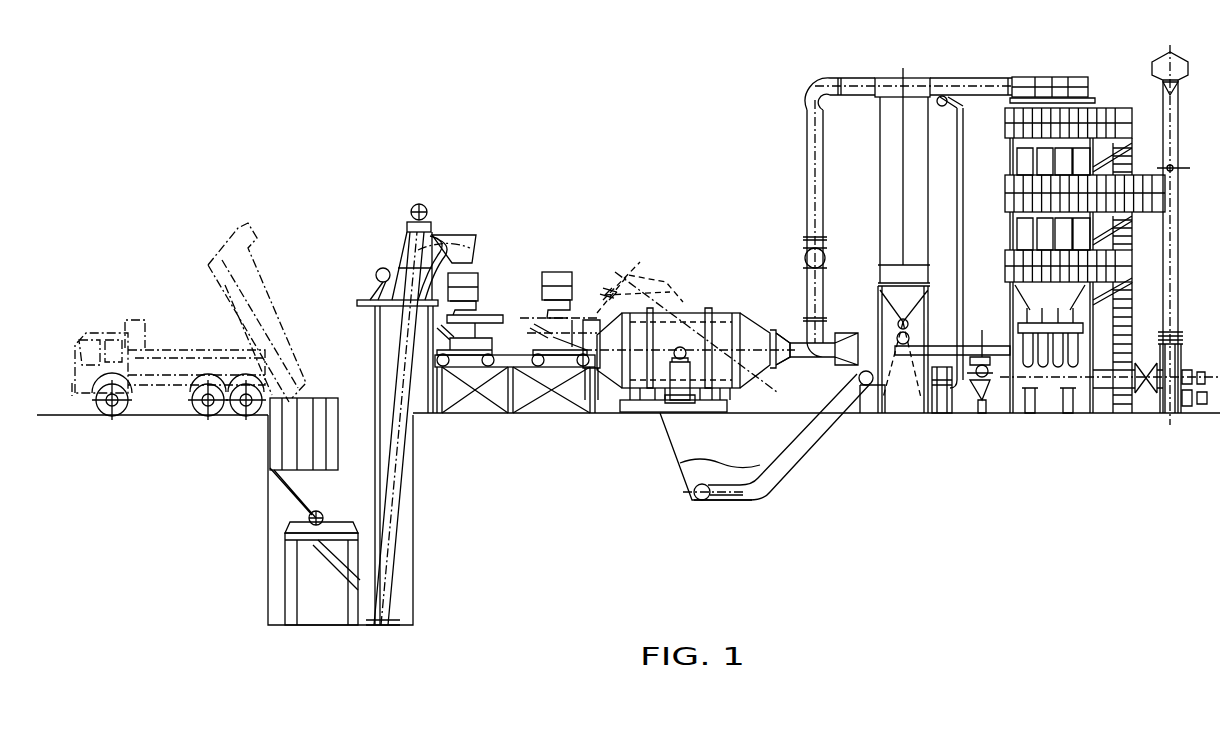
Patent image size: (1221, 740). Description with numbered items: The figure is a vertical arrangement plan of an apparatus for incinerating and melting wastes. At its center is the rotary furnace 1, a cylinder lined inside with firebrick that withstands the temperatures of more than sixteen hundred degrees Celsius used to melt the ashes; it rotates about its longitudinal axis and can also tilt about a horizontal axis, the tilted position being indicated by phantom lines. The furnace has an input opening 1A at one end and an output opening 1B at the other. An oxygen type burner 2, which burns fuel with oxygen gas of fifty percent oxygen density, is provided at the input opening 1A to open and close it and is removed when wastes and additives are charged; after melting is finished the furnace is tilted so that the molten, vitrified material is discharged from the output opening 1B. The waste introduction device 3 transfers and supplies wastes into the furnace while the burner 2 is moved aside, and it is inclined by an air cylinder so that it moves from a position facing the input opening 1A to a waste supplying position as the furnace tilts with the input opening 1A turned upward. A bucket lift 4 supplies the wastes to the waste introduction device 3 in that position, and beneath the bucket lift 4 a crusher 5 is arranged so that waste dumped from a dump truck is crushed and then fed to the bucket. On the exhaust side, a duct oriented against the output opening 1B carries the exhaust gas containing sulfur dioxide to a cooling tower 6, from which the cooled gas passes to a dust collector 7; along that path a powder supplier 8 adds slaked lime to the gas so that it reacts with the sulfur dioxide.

The rotary furnace 1 is at (689, 296).
The input opening 1A is at (628, 267).
The output opening 1B is at (770, 332).
The oxygen type burner 2 is at (553, 372).
The waste introduction device 3 is at (503, 292).
The bucket lift 4 is at (398, 234).
The crusher 5 is at (280, 497).
The cooling tower 6 is at (919, 79).
The dust collector 7 is at (1108, 87).
The powder supplier 8 is at (947, 418).